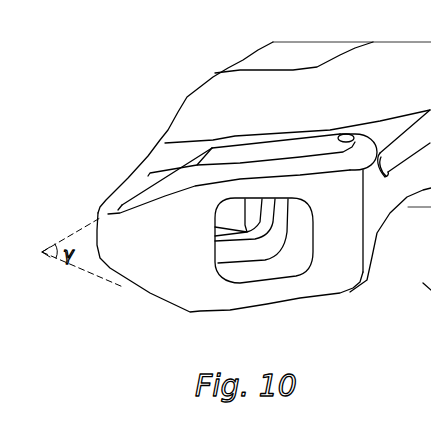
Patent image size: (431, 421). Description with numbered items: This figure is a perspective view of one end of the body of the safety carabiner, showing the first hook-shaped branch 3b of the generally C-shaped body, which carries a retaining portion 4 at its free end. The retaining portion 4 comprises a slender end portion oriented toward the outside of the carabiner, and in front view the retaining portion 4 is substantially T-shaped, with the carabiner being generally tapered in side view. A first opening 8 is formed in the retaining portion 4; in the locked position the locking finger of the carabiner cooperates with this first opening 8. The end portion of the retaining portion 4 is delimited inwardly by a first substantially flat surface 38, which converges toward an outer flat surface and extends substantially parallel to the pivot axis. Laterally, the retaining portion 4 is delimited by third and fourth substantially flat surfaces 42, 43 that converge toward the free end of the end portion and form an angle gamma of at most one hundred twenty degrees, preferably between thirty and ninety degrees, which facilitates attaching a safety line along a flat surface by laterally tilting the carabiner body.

The first hook-shaped branch 3b is at (270, 62).
The retaining portion 4 is at (148, 157).
The third substantially flat surface 42 is at (143, 192).
The fourth substantially flat surface 43 is at (153, 302).
The first opening 8 is at (245, 270).
The first substantially flat surface 38 is at (291, 284).